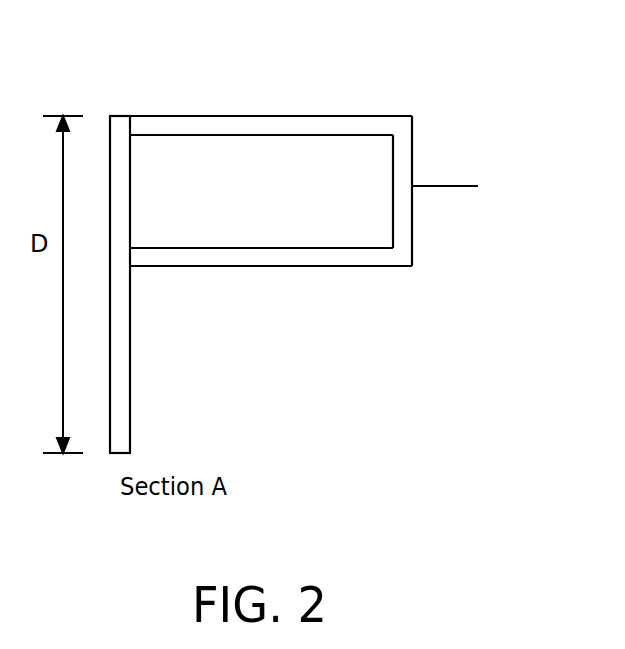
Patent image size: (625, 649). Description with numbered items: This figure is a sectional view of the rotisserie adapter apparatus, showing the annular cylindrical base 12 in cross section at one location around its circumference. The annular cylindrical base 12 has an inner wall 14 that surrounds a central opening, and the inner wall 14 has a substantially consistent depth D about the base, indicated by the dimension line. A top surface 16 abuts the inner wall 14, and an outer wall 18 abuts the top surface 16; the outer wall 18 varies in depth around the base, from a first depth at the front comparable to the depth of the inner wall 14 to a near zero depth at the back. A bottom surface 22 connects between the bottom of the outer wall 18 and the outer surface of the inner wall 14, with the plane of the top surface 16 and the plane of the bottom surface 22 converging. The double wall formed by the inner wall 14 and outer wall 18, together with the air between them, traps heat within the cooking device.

The annular cylindrical base 12 is at (412, 116).
The inner wall 14 is at (130, 360).
The top surface 16 is at (260, 116).
The outer wall 18 is at (464, 221).
The bottom surface 22 is at (298, 267).